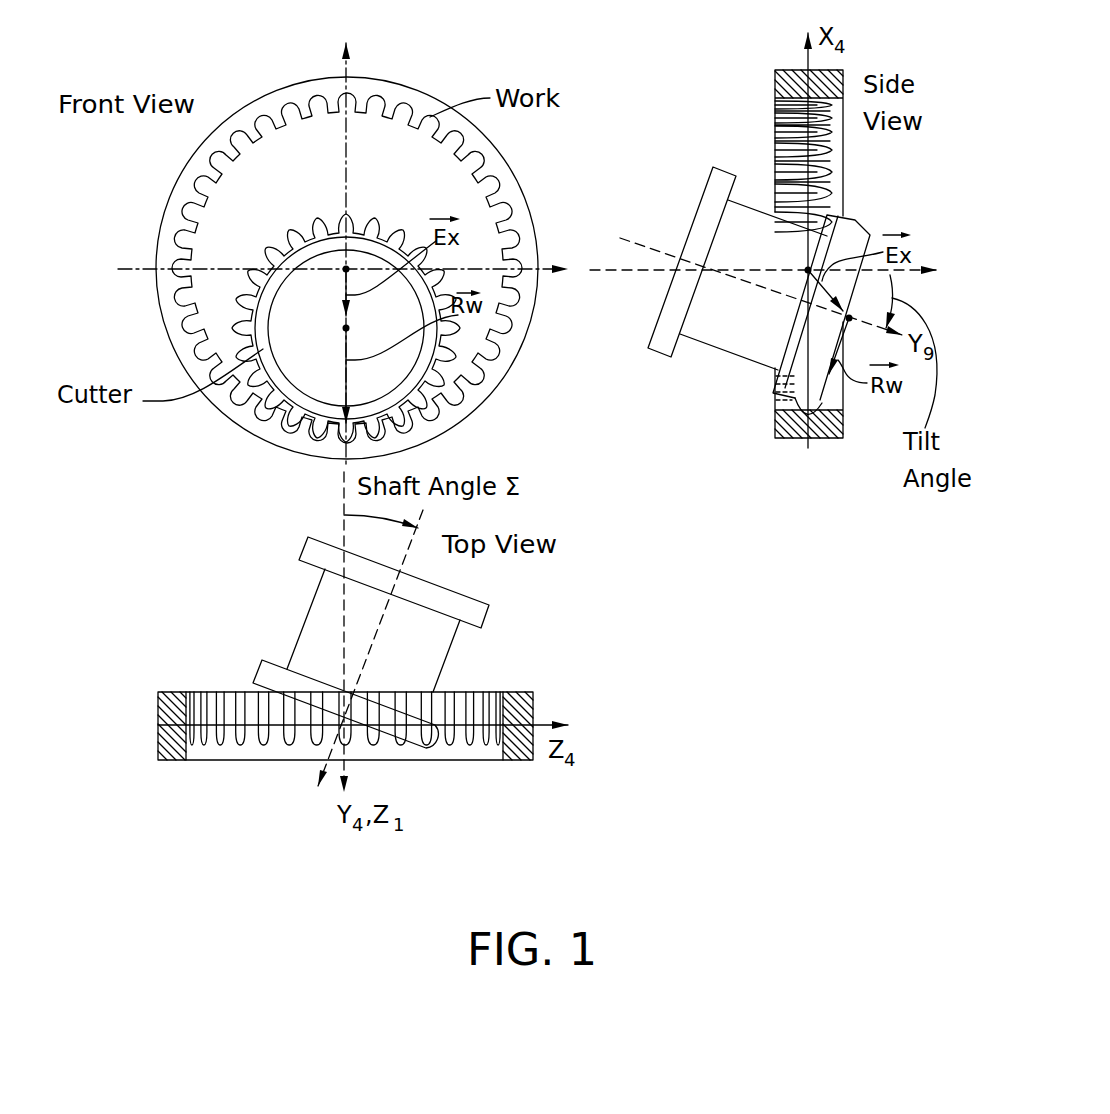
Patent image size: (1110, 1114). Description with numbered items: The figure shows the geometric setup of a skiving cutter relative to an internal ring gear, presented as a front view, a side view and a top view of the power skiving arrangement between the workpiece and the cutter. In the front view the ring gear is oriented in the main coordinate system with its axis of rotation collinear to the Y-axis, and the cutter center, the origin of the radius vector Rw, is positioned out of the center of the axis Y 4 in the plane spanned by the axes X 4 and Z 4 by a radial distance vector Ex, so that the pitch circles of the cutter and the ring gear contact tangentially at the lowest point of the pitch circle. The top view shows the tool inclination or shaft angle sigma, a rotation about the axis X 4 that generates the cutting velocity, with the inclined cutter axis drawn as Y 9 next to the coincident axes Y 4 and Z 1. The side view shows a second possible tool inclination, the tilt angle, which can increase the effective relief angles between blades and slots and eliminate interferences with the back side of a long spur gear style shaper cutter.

The machine coordinate axes X4, Y4, Z4 (work) 4 is at (346, 245).
The cutter axis Y9 9 is at (356, 666).
The axis Z1 1 is at (784, 288).